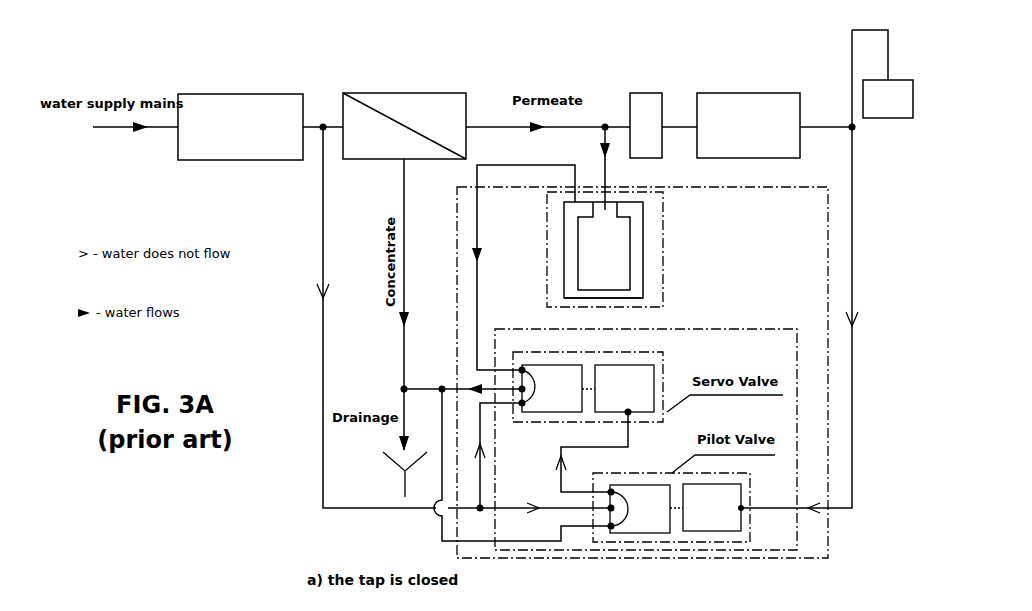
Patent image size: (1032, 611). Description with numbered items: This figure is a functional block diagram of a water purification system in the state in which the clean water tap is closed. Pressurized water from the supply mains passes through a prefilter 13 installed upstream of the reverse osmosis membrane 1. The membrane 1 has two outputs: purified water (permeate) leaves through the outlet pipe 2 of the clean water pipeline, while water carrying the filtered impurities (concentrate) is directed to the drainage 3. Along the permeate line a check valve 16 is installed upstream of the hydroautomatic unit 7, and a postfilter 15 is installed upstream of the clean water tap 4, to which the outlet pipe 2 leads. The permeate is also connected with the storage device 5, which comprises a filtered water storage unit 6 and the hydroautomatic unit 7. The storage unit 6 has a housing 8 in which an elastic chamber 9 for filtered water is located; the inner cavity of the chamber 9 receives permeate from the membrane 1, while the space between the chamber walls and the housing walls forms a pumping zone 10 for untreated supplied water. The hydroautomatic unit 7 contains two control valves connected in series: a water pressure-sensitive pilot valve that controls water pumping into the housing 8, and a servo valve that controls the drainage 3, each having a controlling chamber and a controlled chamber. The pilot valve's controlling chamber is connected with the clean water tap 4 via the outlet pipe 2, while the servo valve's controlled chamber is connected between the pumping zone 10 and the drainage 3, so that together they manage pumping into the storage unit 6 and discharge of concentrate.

The reverse osmosis membrane 1 is at (402, 93).
The outlet pipe 2 is at (480, 127).
The drainage 3 is at (403, 207).
The clean water tap 4 is at (887, 118).
The storage device 5 is at (642, 372).
The filtered water storage unit 6 is at (605, 249).
The hydroautomatic unit 7 is at (646, 439).
The housing 8 is at (643, 290).
The elastic chamber 9 is at (630, 275).
The pumping zone 10 is at (636, 245).
The prefilter 13 is at (233, 94).
The postfilter 15 is at (743, 93).
The check valve 16 is at (650, 93).